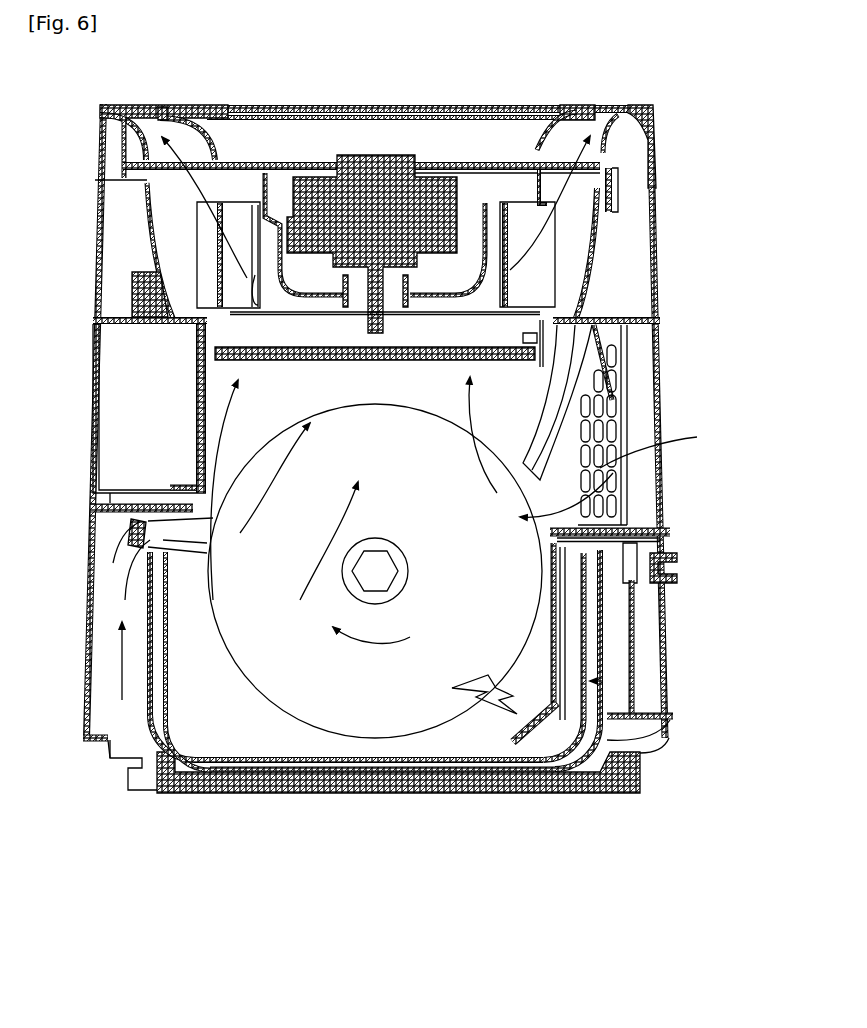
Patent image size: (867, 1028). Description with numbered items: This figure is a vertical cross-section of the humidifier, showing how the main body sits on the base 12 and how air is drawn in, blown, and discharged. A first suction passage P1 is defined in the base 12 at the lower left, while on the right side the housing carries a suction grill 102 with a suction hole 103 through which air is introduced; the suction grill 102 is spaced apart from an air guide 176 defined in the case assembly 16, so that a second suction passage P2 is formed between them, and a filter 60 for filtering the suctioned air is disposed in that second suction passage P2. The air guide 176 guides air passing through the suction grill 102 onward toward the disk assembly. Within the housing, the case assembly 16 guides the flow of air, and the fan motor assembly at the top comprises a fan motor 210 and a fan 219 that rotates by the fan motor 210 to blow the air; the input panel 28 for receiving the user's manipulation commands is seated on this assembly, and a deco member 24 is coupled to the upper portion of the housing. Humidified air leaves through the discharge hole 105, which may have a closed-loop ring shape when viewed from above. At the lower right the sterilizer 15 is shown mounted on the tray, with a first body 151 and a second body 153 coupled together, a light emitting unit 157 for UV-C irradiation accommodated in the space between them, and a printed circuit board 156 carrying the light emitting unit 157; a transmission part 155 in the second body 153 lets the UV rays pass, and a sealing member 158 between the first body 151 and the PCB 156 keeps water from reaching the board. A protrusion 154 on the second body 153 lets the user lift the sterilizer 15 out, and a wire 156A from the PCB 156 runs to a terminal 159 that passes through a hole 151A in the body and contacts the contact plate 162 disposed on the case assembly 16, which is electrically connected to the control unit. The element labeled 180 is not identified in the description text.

The discharge hole 105 is at (149, 125).
The fan 219 is at (236, 200).
The fan motor 210 is at (372, 163).
The input panel 28 is at (450, 104).
The deco member 24 is at (625, 124).
The air guide 176 is at (603, 314).
The suction grill 102 is at (663, 343).
The suction hole 103 is at (605, 381).
The filter 60 is at (650, 481).
The second suction passage P2 is at (617, 511).
The contact plate 162 is at (588, 534).
The terminal 159 is at (680, 564).
The hole 151A is at (590, 553).
The protrusion 154 is at (593, 600).
The second body 153 is at (580, 630).
The first body 151 is at (584, 648).
The wire 156A is at (603, 681).
The sterilizer 15 is at (660, 717).
The transmission part 155 is at (605, 737).
The light emitting unit 157 is at (573, 745).
The sealing member 158 is at (528, 745).
The printed circuit board 156 is at (543, 742).
The base 12 is at (228, 793).
The first suction passage P1 is at (120, 760).
The control box 180 is at (200, 418).
The case assembly 16 is at (200, 452).